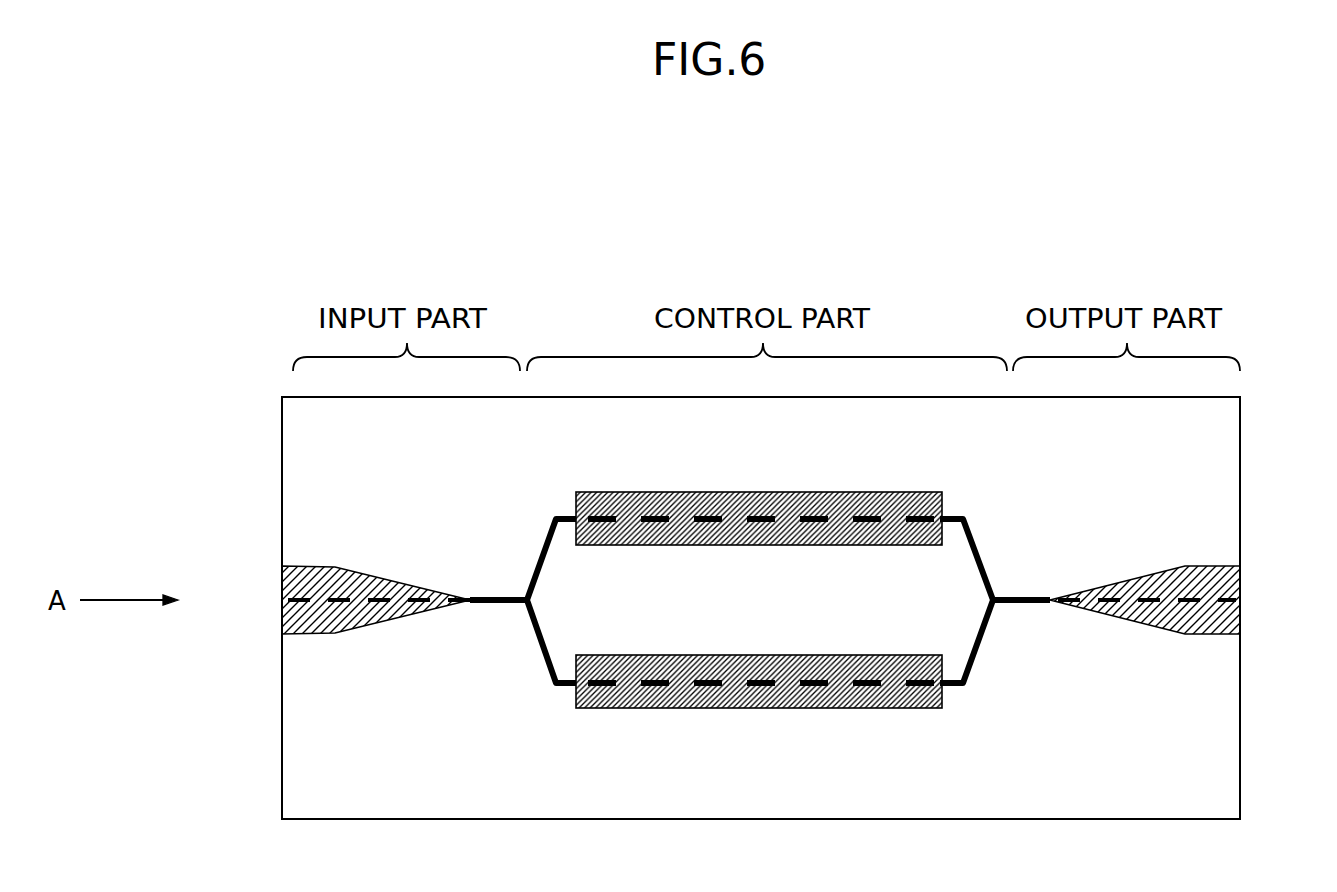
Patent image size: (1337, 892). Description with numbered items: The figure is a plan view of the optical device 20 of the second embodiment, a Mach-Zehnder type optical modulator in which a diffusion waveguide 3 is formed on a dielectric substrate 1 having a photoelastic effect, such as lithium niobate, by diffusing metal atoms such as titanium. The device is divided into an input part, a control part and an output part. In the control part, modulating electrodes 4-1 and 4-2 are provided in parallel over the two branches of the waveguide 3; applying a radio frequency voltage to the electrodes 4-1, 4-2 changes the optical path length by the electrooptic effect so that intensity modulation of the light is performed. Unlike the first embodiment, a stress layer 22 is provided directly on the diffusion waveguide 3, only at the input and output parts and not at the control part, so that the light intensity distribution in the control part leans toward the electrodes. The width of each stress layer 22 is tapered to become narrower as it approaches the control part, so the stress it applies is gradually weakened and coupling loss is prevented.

The optical device 20 is at (170, 211).
The dielectric substrate 1 is at (1230, 790).
The stress layer 22 is at (282, 586).
The waveguide (optical waveguide) 3 is at (503, 606).
The modulating electrode 4-1 is at (878, 492).
The modulating electrode 4-2 is at (873, 708).